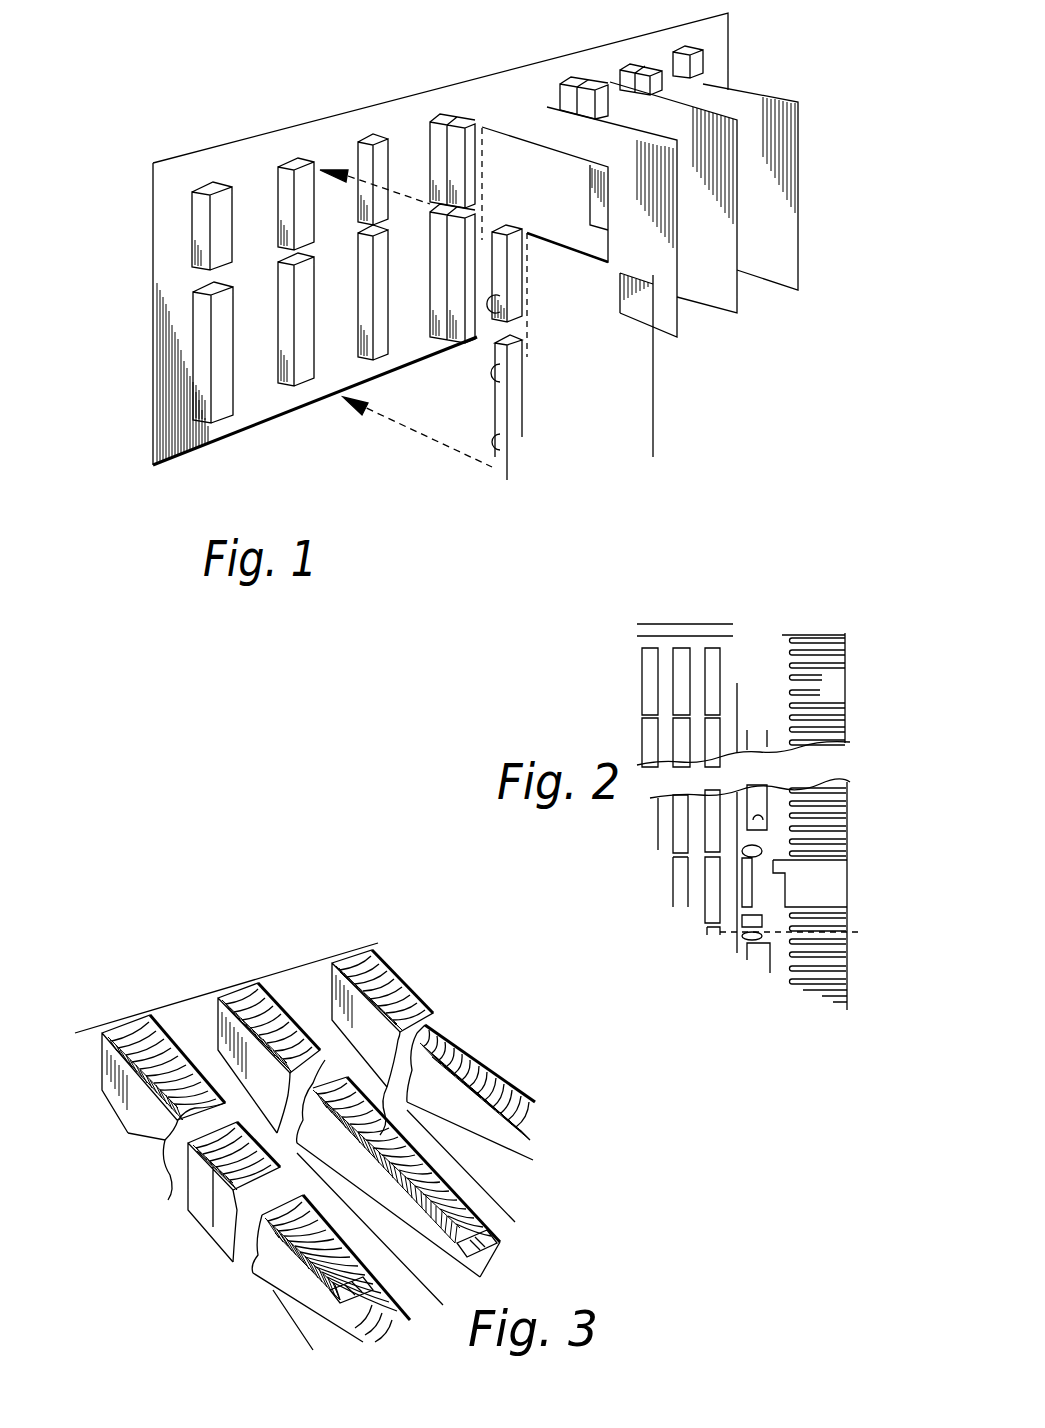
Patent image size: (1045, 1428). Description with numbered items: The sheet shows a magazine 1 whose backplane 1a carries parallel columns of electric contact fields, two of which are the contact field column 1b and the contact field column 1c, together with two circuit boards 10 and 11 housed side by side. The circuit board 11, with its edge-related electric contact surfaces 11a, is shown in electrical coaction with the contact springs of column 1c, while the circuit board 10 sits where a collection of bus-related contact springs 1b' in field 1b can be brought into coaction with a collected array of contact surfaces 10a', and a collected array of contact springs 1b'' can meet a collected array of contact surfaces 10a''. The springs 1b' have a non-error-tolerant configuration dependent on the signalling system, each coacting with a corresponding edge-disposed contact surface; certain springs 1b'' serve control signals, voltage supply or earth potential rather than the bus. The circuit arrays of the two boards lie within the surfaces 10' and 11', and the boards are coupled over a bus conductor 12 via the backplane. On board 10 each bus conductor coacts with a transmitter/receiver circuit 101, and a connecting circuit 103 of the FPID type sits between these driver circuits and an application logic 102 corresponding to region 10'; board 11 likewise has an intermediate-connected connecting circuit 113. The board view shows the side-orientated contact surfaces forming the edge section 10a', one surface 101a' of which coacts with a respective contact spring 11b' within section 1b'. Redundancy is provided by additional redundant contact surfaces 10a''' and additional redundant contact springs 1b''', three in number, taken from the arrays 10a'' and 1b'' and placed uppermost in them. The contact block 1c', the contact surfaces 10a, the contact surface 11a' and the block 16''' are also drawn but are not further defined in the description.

In FIG. 1, the electronic module housing 1 is at (236, 131).
In FIG. 1, the panel surface 1a is at (333, 127).
In FIG. 3, the panel surface 1a is at (142, 1010).
In FIG. 1, the panel edge 1b is at (315, 424).
In FIG. 1, the guide block 1b' is at (283, 166).
In FIG. 3, the guide block 1b' is at (140, 1028).
In FIG. 1, the guide block 1b'' is at (288, 361).
In FIG. 3, the guide block 1b'' is at (293, 1272).
In FIG. 1, the guide block 1b''' is at (238, 385).
In FIG. 1, the connector block 1c is at (452, 322).
In FIG. 1, the connector block 1c' is at (443, 123).
In FIG. 1, the guide path 12 is at (400, 155).
In FIG. 1, the circuit board 11 is at (545, 242).
In FIG. 1, the board notch 11' is at (624, 197).
In FIG. 1, the board contact 11a is at (510, 70).
In FIG. 1, the board contact 11a' is at (474, 61).
In FIG. 1, the contact strip 113 is at (483, 143).
In FIG. 1, the circuit card 10 is at (628, 267).
In FIG. 1, the card tab 10' is at (663, 331).
In FIG. 1, the contact spring 10a is at (519, 190).
In FIG. 1, the contact spring 10a' is at (544, 314).
In FIG. 2, the contact spring 10a' is at (896, 700).
In FIG. 1, the contact spring 10a'' is at (543, 454).
In FIG. 2, the contact spring 10a'' is at (900, 1032).
In FIG. 1, the contact spring 10a''' is at (544, 407).
In FIG. 2, the contact spring 10a''' is at (831, 931).
In FIG. 1, the connector contact 103 is at (527, 265).
In FIG. 2, the connector contact 103 is at (748, 636).
In FIG. 2, the connector 101 is at (771, 632).
In FIG. 2, the connector contact 101a' is at (888, 637).
In FIG. 2, the contact array 102 is at (706, 613).
In FIG. 3, the contact slot 11b' is at (162, 1014).
In FIG. 3, the guide block 16''' is at (191, 1192).